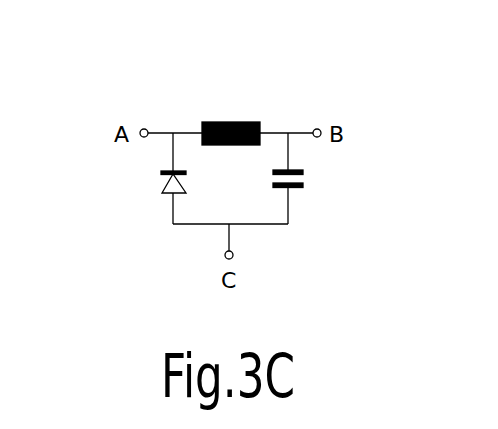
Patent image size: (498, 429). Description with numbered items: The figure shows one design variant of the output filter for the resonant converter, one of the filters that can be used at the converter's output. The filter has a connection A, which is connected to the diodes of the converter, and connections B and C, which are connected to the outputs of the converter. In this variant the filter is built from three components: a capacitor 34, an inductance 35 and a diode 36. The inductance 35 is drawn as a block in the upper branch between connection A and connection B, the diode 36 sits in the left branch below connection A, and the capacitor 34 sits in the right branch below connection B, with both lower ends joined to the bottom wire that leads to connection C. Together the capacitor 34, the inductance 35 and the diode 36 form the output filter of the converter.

The capacitor 34 is at (303, 185).
The inductance 35 is at (230, 122).
The diode 36 is at (162, 184).